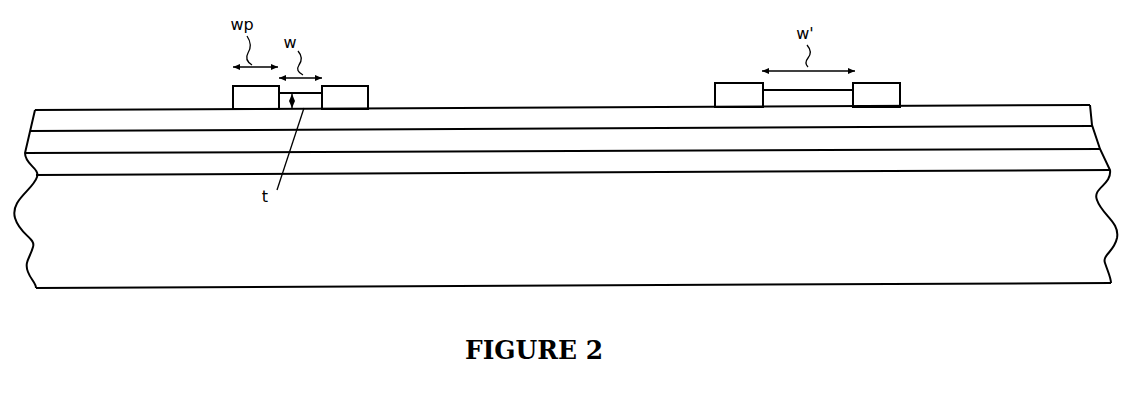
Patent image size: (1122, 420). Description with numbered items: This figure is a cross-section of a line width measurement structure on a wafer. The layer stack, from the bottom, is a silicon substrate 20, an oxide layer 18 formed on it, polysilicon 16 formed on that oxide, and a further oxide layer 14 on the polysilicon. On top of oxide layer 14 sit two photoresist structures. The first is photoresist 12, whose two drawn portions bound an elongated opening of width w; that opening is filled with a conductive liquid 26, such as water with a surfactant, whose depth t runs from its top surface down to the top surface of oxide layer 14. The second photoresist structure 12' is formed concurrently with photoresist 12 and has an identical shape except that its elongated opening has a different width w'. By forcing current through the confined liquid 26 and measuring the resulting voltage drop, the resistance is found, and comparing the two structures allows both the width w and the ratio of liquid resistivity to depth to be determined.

The photoresist 12 is at (277, 77).
The second photoresist structure 12' is at (807, 75).
The oxide layer 14 is at (135, 124).
The polysilicon 16 is at (103, 142).
The oxide layer 18 is at (128, 168).
The silicon substrate 20 is at (1069, 272).
The conductive liquid 26 is at (313, 100).